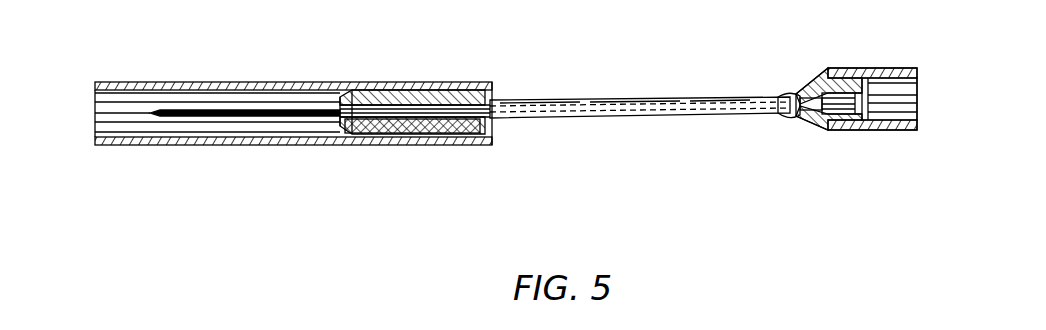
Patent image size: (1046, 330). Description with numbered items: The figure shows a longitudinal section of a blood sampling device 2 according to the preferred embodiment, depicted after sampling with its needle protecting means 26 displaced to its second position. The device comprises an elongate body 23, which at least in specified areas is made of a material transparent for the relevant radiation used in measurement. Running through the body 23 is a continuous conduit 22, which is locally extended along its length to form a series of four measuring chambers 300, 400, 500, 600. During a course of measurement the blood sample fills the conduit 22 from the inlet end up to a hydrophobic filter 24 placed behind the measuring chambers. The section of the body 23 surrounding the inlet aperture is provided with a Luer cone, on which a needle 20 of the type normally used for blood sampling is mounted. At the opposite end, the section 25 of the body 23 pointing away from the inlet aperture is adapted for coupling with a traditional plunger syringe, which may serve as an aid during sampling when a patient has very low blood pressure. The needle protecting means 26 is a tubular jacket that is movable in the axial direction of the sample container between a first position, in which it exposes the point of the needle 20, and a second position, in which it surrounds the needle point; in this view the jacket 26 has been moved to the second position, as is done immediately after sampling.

The sampling device 2 is at (848, 88).
The needle 20 is at (360, 87).
The conduit 22 is at (433, 140).
The body 23 is at (553, 120).
The hydrophobic filter 24 is at (812, 117).
The section of the body 25 is at (843, 135).
The needle protecting means 26 is at (268, 82).
The measuring chamber 300 is at (521, 100).
The measuring chamber 400 is at (606, 99).
The measuring chamber 500 is at (691, 98).
The measuring chamber 600 is at (771, 97).